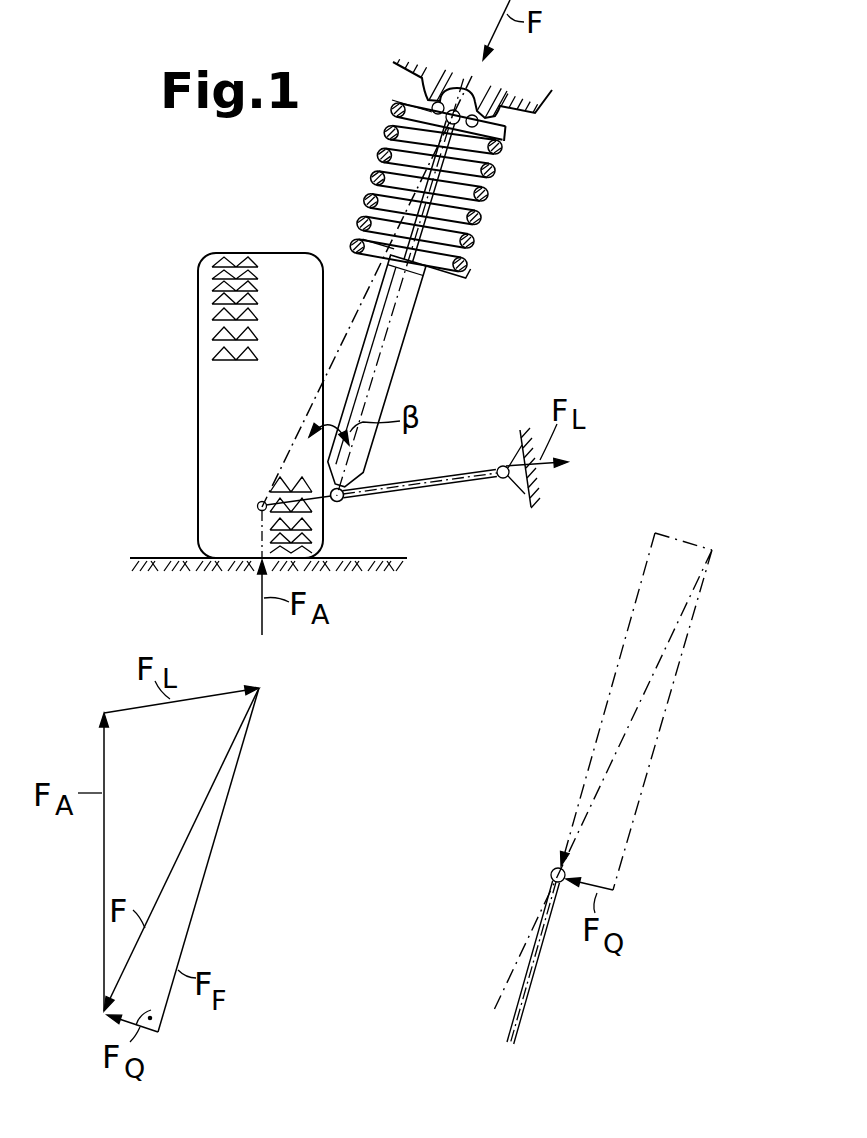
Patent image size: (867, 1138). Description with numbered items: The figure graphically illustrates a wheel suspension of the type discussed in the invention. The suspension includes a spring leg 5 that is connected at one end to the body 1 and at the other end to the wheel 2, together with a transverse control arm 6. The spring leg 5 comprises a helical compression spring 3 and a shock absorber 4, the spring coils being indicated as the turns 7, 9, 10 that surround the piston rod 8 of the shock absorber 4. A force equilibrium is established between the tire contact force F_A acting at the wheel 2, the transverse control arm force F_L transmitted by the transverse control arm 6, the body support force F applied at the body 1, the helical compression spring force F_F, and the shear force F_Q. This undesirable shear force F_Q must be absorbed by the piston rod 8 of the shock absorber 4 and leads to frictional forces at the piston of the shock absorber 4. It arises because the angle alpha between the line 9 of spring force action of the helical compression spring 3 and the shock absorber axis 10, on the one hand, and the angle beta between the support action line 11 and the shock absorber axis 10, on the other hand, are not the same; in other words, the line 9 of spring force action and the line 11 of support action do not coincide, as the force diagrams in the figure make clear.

The body 1 is at (524, 103).
The wheel 2 is at (208, 370).
The helical compression spring 3 is at (474, 187).
The shock absorber 4 is at (386, 364).
The spring leg 5 is at (425, 290).
The transverse control arm 6 is at (461, 481).
The spring coil turn 7 is at (497, 187).
The piston rod 8 is at (383, 147).
The line of spring force action 9 is at (441, 152).
The shock absorber axis 10 is at (478, 208).
The support action line 11 is at (282, 470).